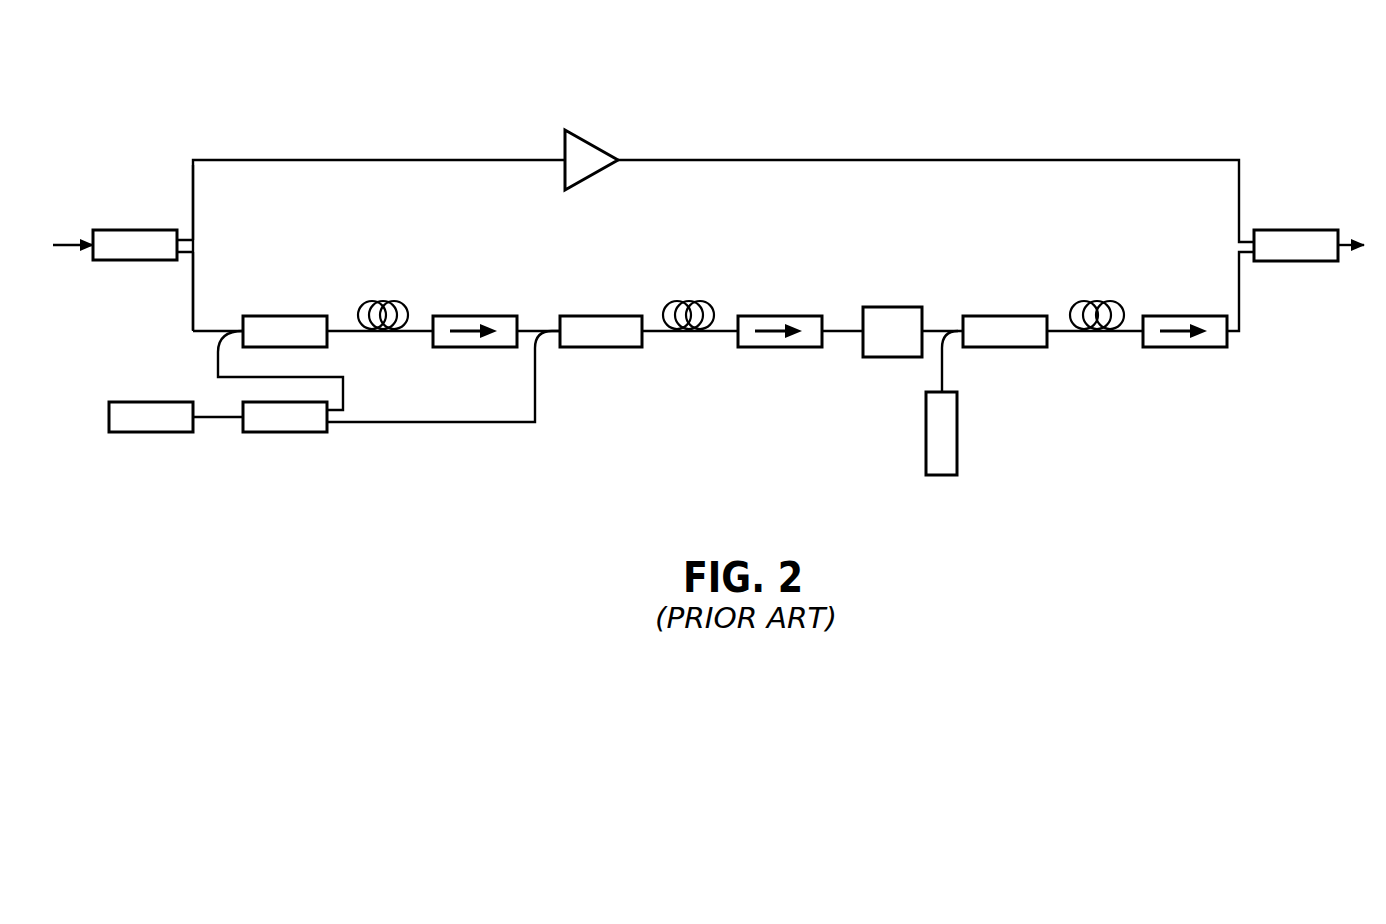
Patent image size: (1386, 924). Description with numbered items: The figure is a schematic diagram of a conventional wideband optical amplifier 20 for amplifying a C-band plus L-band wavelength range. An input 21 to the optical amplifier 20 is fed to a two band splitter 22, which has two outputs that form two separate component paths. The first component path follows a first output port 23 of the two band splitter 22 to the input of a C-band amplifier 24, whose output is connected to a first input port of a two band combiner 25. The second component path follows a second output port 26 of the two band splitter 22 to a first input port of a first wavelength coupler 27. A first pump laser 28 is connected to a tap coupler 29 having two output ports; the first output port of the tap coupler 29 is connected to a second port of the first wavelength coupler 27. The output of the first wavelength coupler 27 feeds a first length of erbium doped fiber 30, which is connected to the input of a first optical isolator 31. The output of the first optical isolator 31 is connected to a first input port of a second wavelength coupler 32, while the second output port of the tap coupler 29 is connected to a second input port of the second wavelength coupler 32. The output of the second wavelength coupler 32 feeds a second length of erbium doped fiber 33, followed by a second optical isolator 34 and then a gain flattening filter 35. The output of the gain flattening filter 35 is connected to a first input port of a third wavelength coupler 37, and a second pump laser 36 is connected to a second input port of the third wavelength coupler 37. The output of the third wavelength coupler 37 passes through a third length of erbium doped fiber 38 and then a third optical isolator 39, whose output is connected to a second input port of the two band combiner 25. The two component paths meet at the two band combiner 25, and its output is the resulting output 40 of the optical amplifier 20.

The optical amplifier 20 is at (893, 57).
The input 21 is at (65, 244).
The two band splitter 22 is at (131, 229).
The first output port 23 is at (193, 176).
The C-band amplifier 24 is at (600, 142).
The two band combiner 25 is at (1297, 262).
The second output port 26 is at (195, 315).
The first wavelength coupler 27 is at (283, 316).
The first pump laser 28 is at (150, 433).
The tap coupler 29 is at (282, 433).
The first length of erbium doped fiber 30 is at (383, 300).
The first optical isolator 31 is at (471, 316).
The second wavelength coupler 32 is at (600, 316).
The second length of erbium doped fiber 33 is at (688, 300).
The second optical isolator 34 is at (777, 316).
The gain flattening filter 35 is at (889, 307).
The second pump laser 36 is at (926, 436).
The third wavelength coupler 37 is at (1003, 316).
The third length of erbium doped fiber 38 is at (1095, 300).
The third optical isolator 39 is at (1183, 316).
The output 40 is at (1345, 243).